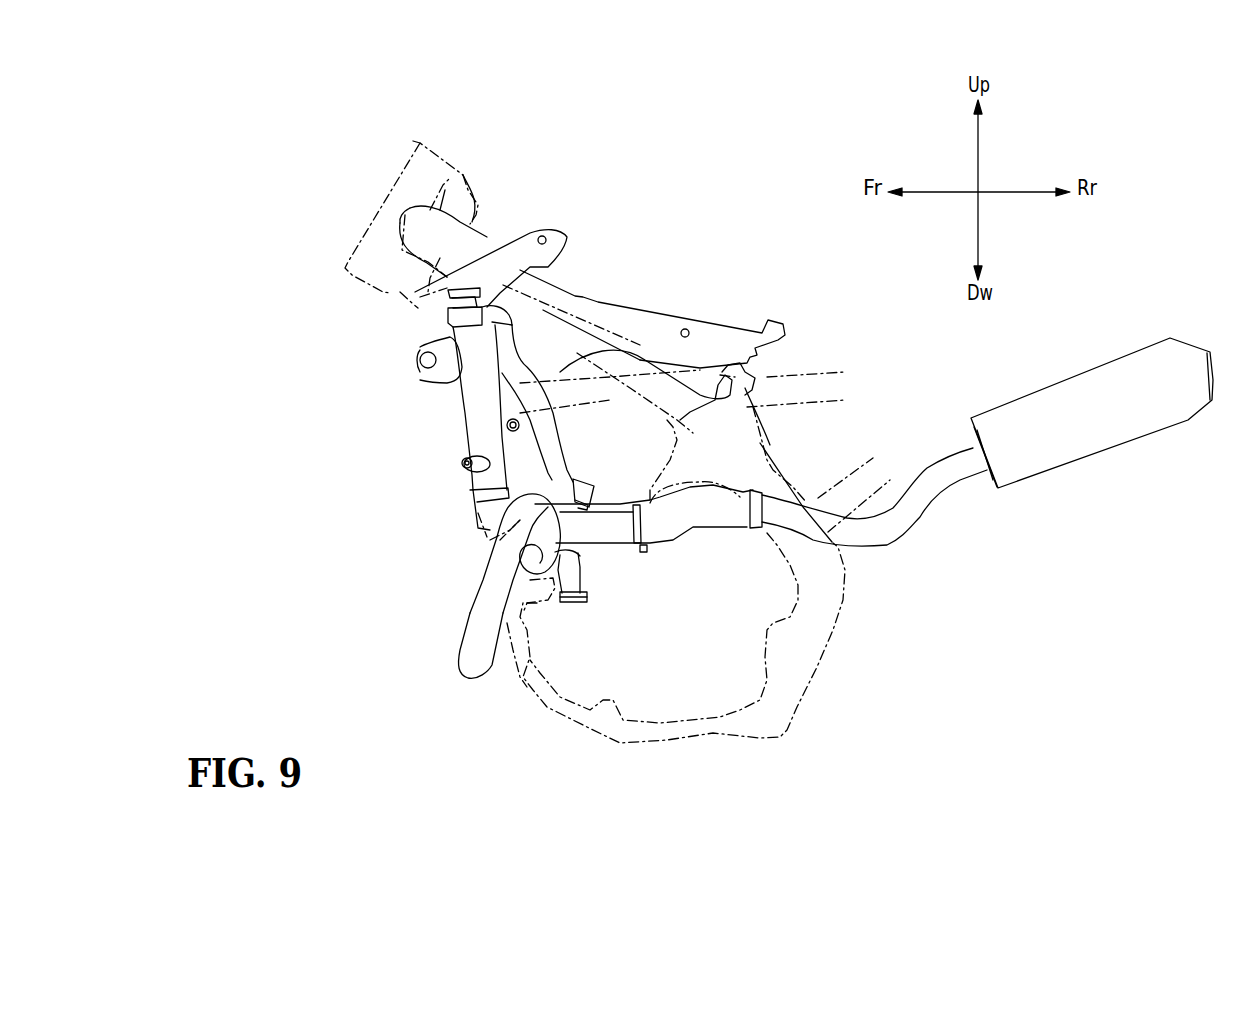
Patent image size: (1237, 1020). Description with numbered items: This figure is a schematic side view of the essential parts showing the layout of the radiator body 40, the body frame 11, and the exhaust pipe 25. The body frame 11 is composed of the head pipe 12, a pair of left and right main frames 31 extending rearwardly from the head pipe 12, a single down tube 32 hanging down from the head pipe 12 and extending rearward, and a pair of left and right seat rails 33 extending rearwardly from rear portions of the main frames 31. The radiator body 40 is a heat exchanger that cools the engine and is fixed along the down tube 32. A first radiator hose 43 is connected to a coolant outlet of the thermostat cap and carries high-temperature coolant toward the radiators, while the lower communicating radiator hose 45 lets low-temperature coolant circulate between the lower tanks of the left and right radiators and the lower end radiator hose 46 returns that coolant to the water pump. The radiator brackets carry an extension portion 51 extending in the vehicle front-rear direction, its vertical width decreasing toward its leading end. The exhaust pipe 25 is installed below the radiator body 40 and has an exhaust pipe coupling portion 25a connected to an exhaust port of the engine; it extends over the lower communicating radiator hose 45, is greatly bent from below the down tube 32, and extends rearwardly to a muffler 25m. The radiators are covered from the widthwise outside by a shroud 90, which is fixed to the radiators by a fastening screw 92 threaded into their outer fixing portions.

The body frame 11 is at (495, 228).
The head pipe 12 is at (407, 182).
The exhaust pipe 25 is at (478, 633).
The exhaust pipe coupling portion 25a is at (547, 497).
The muffler 25m is at (1057, 400).
The main frames 31 is at (433, 190).
The down tube 32 is at (487, 537).
The seat rails 33 is at (812, 380).
The radiator body 40 is at (462, 418).
The first radiator hose 43 is at (565, 462).
The lower communicating radiator hose 45 is at (558, 553).
The lower end radiator hose 46 is at (573, 585).
The extension portion 51 is at (447, 372).
The shroud 90 is at (615, 300).
The fastening screw 92 is at (465, 472).